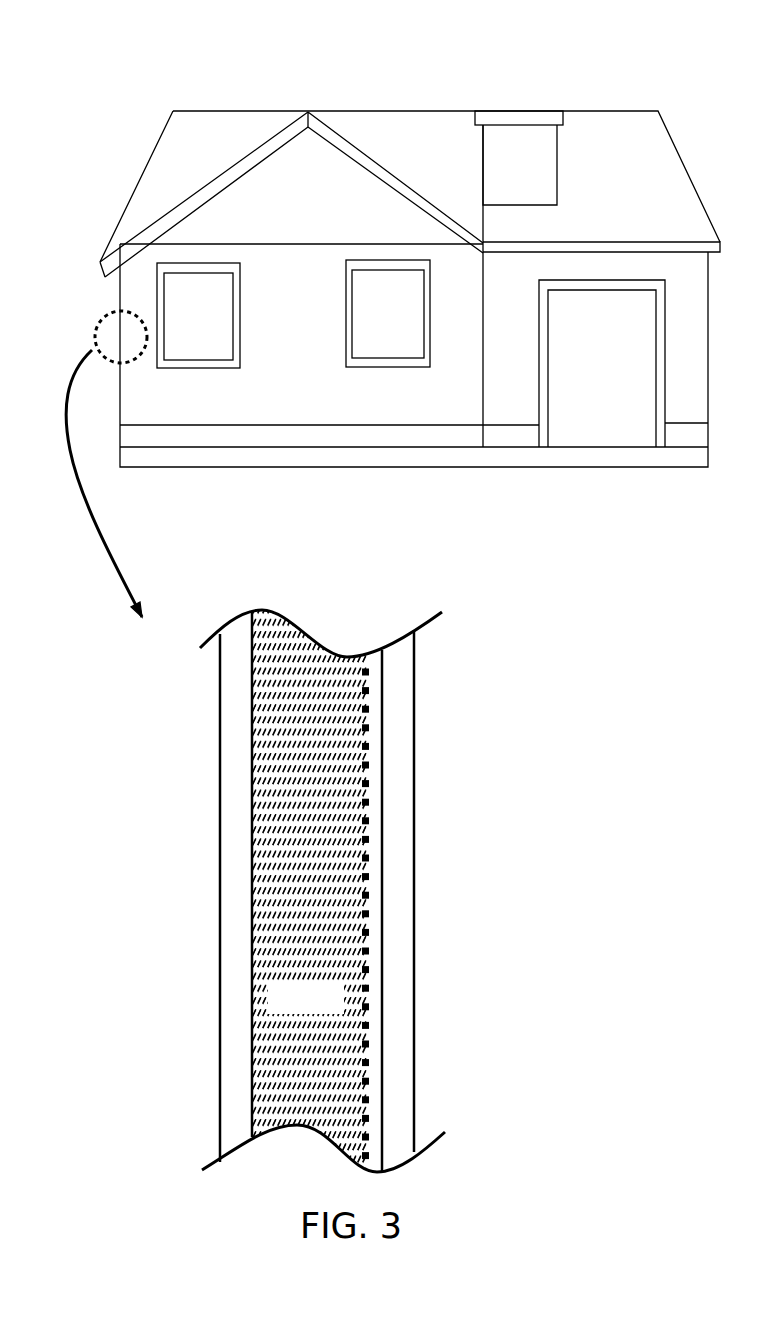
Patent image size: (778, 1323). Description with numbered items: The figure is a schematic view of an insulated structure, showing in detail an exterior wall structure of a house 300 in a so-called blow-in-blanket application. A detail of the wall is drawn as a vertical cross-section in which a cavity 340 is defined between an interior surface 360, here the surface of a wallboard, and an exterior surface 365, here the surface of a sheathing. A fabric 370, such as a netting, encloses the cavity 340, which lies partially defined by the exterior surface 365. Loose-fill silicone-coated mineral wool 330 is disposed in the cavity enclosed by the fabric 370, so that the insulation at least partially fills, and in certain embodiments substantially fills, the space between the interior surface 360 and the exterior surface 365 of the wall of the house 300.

The house 300 is at (611, 72).
The loose-fill silicone-coated mineral wool 330 is at (288, 750).
The cavity 340 is at (332, 1007).
The interior surface 360 is at (383, 757).
The exterior surface 365 is at (248, 820).
The fabric 370 is at (367, 835).